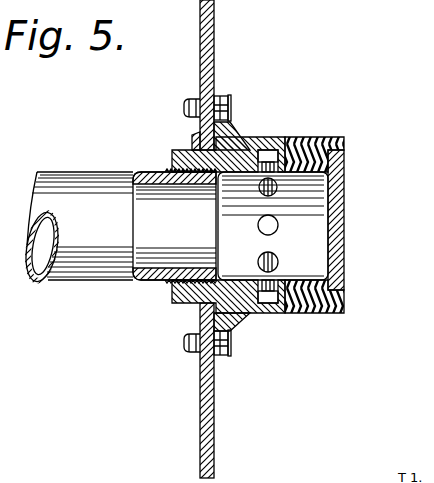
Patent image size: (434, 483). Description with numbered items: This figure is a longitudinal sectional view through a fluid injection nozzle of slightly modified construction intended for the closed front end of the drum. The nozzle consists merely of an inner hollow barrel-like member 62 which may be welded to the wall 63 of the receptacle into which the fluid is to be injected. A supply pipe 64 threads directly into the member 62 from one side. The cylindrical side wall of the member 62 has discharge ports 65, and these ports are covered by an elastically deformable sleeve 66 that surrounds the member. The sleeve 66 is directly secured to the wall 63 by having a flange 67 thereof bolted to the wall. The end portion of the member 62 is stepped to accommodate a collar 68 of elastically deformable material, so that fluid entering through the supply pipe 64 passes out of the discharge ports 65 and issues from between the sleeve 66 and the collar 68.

The inner hollow barrel-like member 62 is at (322, 256).
The wall 63 is at (211, 430).
The supply pipe 64 is at (88, 282).
The discharge ports 65 is at (280, 220).
The elastically deformable sleeve 66 is at (322, 137).
The flange 67 is at (219, 95).
The collar 68 is at (346, 152).